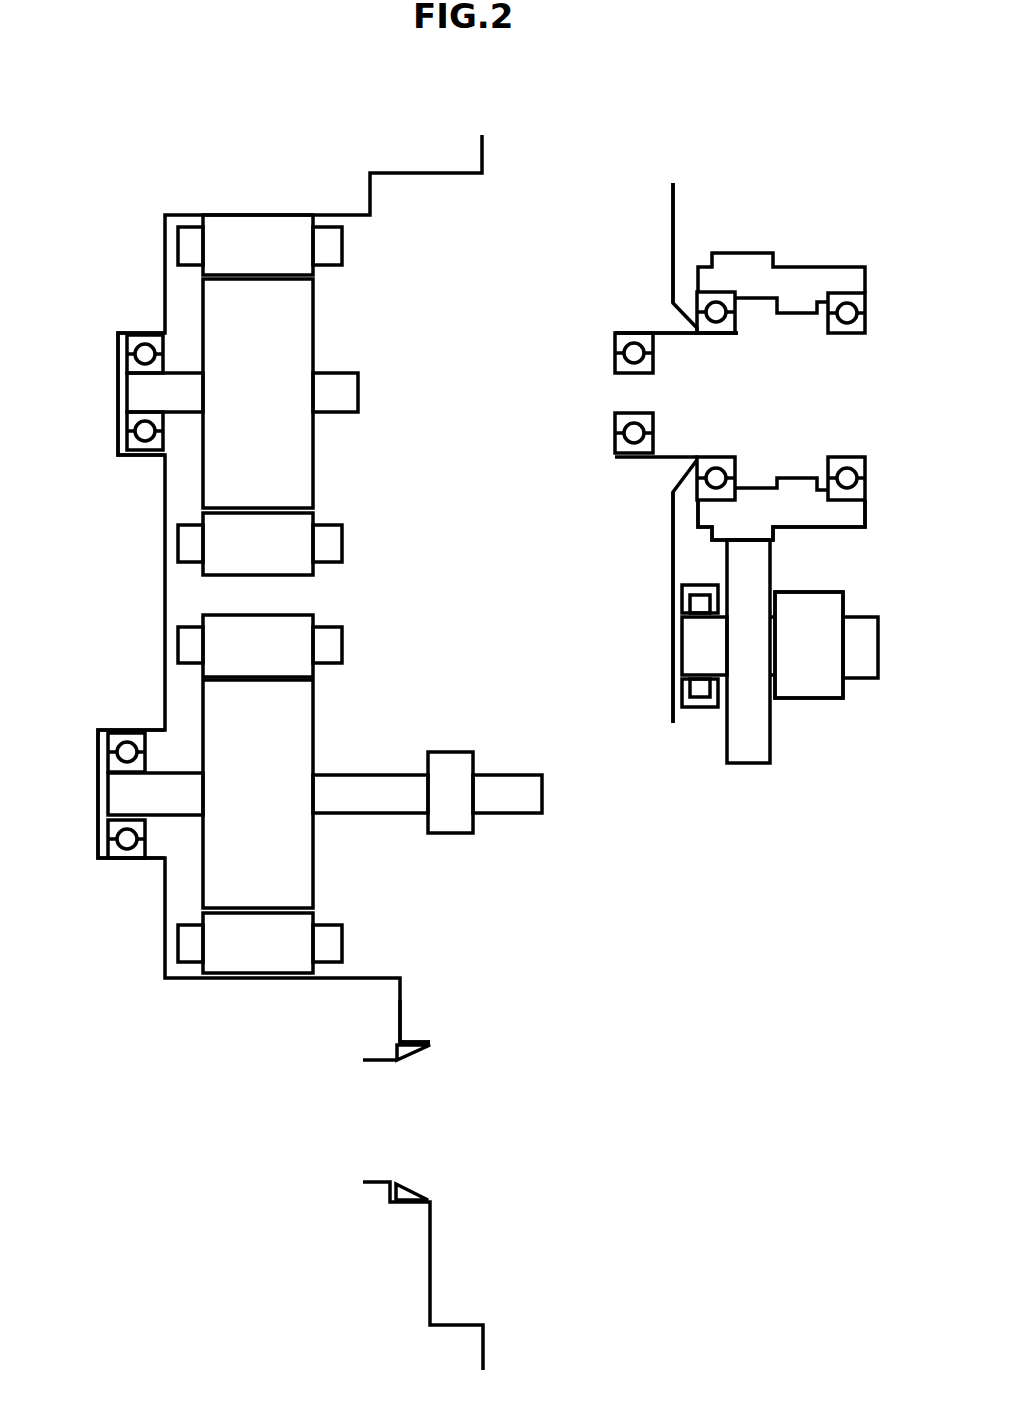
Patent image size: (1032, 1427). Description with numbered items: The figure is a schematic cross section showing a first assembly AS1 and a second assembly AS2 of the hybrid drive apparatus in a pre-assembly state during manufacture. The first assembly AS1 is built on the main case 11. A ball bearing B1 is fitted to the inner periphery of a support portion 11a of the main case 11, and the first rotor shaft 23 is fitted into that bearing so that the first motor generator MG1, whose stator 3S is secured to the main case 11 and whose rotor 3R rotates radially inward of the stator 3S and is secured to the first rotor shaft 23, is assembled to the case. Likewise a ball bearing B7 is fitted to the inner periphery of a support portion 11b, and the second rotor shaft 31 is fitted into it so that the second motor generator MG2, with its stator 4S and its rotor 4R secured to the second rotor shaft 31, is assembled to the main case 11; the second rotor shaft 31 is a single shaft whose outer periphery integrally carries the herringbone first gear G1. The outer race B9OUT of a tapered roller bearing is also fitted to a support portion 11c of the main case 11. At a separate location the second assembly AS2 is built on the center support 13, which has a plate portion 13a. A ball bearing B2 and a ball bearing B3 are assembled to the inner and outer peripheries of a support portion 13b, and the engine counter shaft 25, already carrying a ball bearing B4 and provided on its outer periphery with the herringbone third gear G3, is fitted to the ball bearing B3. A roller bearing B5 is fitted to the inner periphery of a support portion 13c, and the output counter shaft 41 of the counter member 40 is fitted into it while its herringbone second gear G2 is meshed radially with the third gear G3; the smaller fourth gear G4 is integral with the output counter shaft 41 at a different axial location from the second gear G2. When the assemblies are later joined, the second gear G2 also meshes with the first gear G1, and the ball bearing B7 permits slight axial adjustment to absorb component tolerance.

The first assembly AS1 is at (256, 104).
The second assembly AS2 is at (743, 104).
The main case 11 is at (430, 158).
The support portion 11a is at (133, 458).
The support portion 11b is at (135, 860).
The support portion 11c is at (410, 1040).
The first motor generator MG1 is at (190, 392).
The stator 3S is at (212, 248).
The rotor 3R is at (213, 303).
The ball bearing B1 is at (133, 360).
The first rotor shaft 23 is at (135, 400).
The second motor generator MG2 is at (190, 790).
The stator 4S is at (212, 648).
The rotor 4R is at (213, 700).
The ball bearing B7 is at (115, 848).
The second rotor shaft 31 is at (118, 796).
The first gear G1 is at (437, 818).
The outer race B9OUT is at (392, 1052).
The center support 13 is at (660, 232).
The plate portion 13a is at (676, 235).
The support portion 13b is at (668, 332).
The support portion 13c is at (692, 592).
The engine counter shaft 25 is at (822, 277).
The ball bearing B2 is at (620, 362).
The ball bearing B3 is at (727, 325).
The ball bearing B4 is at (840, 325).
The roller bearing B5 is at (690, 710).
The second gear G2 is at (748, 762).
The third gear G3 is at (766, 532).
The fourth gear G4 is at (812, 690).
The counter member 40 is at (862, 582).
The output counter shaft 41 is at (860, 666).